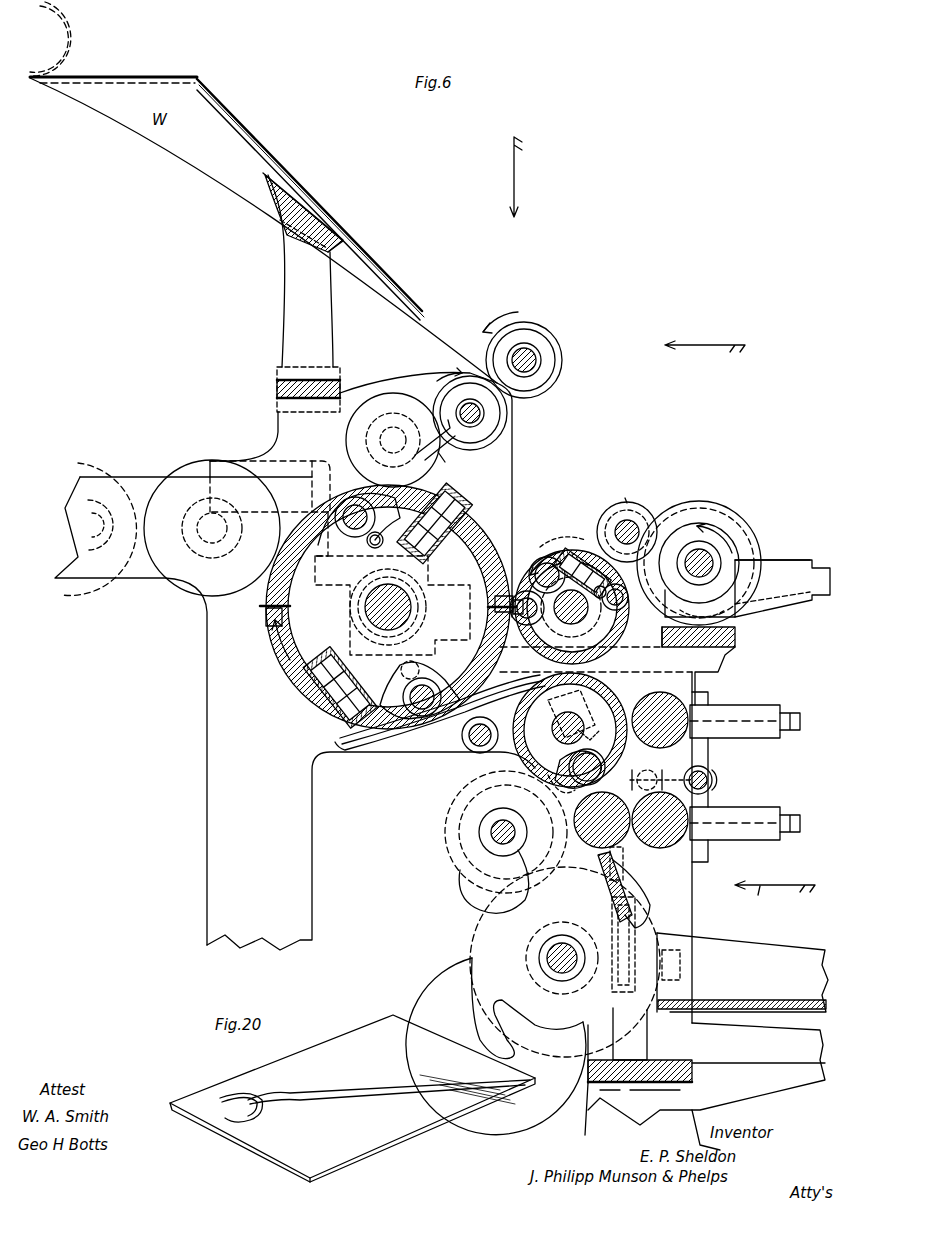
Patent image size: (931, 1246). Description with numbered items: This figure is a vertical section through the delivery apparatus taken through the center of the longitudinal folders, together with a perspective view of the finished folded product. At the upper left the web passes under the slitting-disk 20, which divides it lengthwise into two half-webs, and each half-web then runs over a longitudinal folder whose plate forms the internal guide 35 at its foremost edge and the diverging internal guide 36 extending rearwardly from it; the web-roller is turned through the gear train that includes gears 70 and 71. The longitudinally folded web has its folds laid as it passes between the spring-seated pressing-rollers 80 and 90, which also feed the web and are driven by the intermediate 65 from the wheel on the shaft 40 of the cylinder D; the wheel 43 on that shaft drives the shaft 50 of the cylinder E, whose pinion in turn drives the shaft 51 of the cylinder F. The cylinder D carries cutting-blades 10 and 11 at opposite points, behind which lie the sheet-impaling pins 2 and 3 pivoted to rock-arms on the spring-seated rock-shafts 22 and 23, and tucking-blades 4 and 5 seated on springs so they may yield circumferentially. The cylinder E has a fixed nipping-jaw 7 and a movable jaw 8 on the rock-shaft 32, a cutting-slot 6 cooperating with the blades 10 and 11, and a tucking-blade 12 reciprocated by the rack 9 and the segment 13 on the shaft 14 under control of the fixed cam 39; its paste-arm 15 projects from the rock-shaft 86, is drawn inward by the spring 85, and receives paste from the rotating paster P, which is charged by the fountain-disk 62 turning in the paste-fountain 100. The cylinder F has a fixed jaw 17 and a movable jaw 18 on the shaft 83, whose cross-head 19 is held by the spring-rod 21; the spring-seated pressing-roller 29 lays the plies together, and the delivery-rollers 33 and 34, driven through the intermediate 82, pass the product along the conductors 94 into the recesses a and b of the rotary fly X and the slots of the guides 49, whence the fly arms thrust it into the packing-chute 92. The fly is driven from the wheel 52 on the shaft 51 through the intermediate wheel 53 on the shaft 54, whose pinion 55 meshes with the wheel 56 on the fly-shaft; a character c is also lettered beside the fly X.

The slitting-disk 20 is at (50, 39).
The internal guide 35 is at (197, 77).
The internal guide 36 is at (146, 144).
The gear 71 is at (112, 448).
The gear 70 is at (188, 459).
The pressing-roller 90 is at (562, 360).
The pressing-roller 80 is at (485, 450).
The intermediate 65 is at (366, 440).
The shaft of cylinder D 40 is at (381, 585).
The rock-shaft 22 is at (347, 530).
The sheet-impaling pin 2 is at (420, 488).
The cutting-blade 10 is at (452, 508).
The cutting-blade 11 is at (322, 724).
The rock-shaft 23 is at (432, 682).
The tucking-blade 5 is at (490, 590).
The tucking-blade 4 is at (258, 617).
The fixed nipping-jaw 7 is at (510, 650).
The sheet-impaling pin 3 is at (350, 715).
The fixed cam 39 is at (430, 738).
The shaft of cylinder E 50 is at (570, 625).
The rock-shaft 32 is at (560, 630).
The tucking-blade 12 is at (554, 560).
The rock-shaft 86 is at (552, 545).
The paste receiving and applying arm 15 is at (540, 555).
The movable nipping-jaw 8 is at (520, 598).
The rack 9 is at (606, 548).
The cutting-slot 6 is at (596, 535).
The segment 13 is at (601, 595).
The shaft 14 is at (623, 606).
The wheel 43 is at (633, 523).
The fountain-disk 62 is at (705, 501).
The paste-fountain 100 is at (738, 593).
The shaft of cylinder F 51 is at (555, 722).
The spring-rod 21 is at (585, 710).
The cross-head 19 is at (591, 732).
The shaft 83 is at (558, 765).
The movable jaw 18 is at (594, 771).
The fixed nipping-jaw 17 is at (572, 790).
The pressing-roller 29 is at (660, 712).
The delivery-roller 33 is at (590, 843).
The delivery-roller 34 is at (662, 848).
The intermediate 82 is at (660, 765).
The spring 85 is at (706, 768).
The conductors 94 is at (640, 875).
The wheel 52 is at (577, 956).
The guides 49 is at (605, 988).
The wheel 56 is at (478, 905).
The shaft 54 is at (497, 820).
The intermediate wheel 53 is at (452, 800).
The pinion 55 is at (460, 845).
The packing-chute 92 is at (742, 972).
The cylinder D is at (388, 607).
The cylinder E is at (572, 607).
The cylinder F is at (570, 730).
The rotating paster P is at (627, 522).
The rotary fly X is at (496, 1046).
The recess a is at (605, 880).
The recess b is at (646, 944).
The hook c is at (507, 1013).